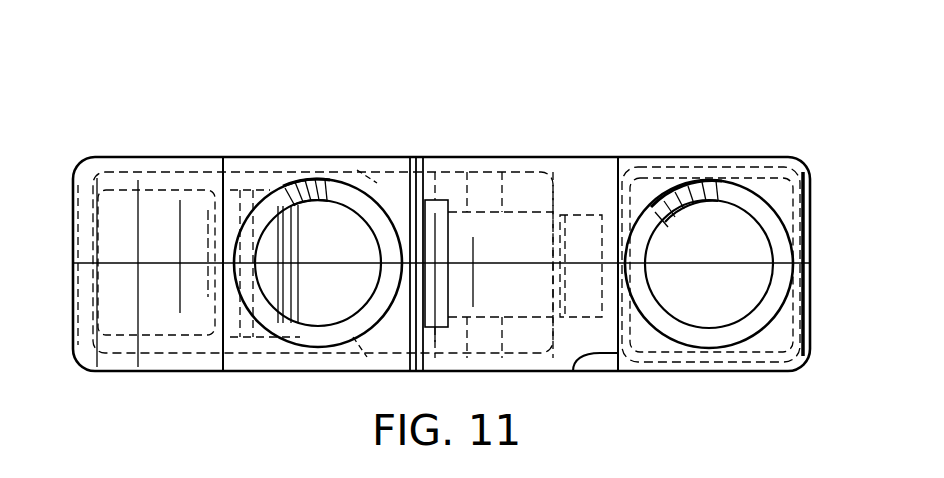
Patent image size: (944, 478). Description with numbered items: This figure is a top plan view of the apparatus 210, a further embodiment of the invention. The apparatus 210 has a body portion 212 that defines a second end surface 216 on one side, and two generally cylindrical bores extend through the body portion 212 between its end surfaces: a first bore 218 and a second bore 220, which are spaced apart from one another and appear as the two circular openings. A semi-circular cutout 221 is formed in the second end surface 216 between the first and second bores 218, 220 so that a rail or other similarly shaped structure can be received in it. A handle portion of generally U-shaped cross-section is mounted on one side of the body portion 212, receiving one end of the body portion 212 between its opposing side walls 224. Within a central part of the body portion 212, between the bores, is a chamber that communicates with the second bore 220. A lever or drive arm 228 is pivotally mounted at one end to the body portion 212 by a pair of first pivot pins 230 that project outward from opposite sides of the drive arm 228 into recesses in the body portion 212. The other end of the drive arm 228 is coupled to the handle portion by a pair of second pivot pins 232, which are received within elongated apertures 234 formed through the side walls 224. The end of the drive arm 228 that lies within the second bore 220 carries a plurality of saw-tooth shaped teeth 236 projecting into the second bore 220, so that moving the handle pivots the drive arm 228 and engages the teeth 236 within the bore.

The apparatus 210 is at (765, 137).
The body portion 212 is at (820, 190).
The second end surface 216 is at (643, 187).
The first bore 218 is at (764, 304).
The second bore 220 is at (382, 264).
The semi-circular cutout 221 is at (580, 372).
The side walls 224 is at (233, 157).
The drive arm 228 is at (441, 160).
The first pivot pins 230 is at (553, 187).
The second pivot pins 232 is at (367, 178).
The elongated apertures 234 is at (315, 348).
The teeth 236 is at (288, 243).